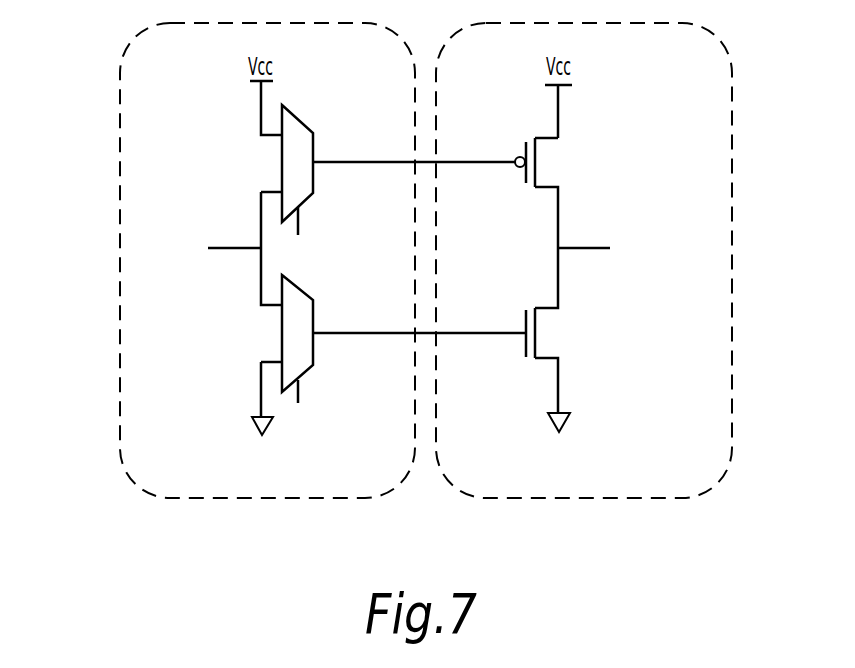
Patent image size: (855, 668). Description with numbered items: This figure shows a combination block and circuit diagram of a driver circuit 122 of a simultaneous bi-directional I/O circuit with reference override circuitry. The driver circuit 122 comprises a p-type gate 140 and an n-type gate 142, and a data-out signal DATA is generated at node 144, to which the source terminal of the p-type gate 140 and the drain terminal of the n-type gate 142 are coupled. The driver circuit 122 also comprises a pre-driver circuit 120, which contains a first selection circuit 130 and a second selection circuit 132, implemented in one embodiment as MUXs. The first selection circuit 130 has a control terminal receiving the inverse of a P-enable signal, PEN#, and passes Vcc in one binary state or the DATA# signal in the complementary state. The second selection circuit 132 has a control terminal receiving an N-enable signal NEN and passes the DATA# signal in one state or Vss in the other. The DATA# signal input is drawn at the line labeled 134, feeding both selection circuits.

The pre-driver circuit 120 is at (120, 126).
The driver circuit 122 is at (732, 126).
The first selection circuit 130 is at (295, 115).
The second selection circuit 132 is at (295, 283).
The data# input line 134 is at (225, 249).
The p-type gate 140 is at (537, 172).
The n-type gate 142 is at (537, 342).
The node 144 is at (592, 247).